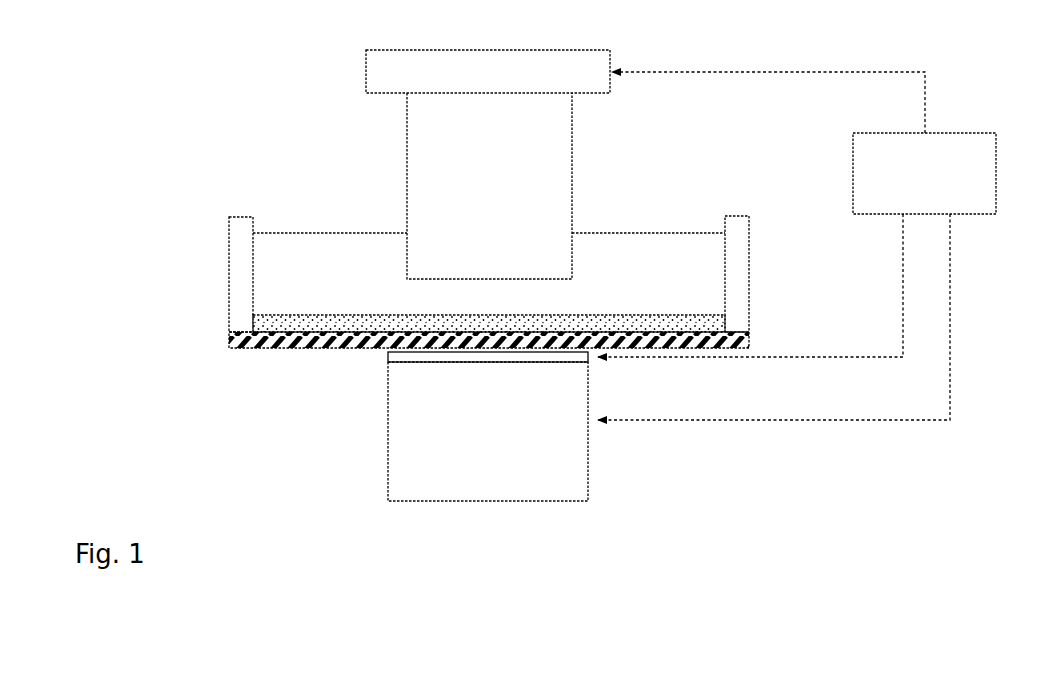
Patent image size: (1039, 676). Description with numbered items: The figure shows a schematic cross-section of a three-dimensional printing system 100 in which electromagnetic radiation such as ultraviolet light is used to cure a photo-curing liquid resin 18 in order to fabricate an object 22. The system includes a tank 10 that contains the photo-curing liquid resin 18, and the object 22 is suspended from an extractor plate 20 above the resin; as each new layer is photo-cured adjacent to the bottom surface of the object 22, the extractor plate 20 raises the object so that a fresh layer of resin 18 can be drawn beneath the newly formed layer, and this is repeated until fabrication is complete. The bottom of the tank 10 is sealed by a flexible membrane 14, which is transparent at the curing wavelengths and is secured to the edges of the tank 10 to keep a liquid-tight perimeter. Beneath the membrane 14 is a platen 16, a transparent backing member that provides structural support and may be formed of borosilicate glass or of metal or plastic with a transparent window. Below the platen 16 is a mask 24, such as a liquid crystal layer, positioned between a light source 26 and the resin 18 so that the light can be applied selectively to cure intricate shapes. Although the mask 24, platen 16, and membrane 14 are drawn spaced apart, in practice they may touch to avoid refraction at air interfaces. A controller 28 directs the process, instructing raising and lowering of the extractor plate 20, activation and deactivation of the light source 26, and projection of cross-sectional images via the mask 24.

The 3D printing system 100 is at (236, 112).
The tank 10 is at (237, 233).
The flexible membrane 14 is at (253, 325).
The platen 16 is at (289, 351).
The photo-curing liquid resin 18 is at (690, 277).
The extractor plate 20 is at (499, 84).
The object 22 is at (499, 201).
The mask 24 is at (400, 357).
The light source 26 is at (499, 445).
The controller 28 is at (937, 187).